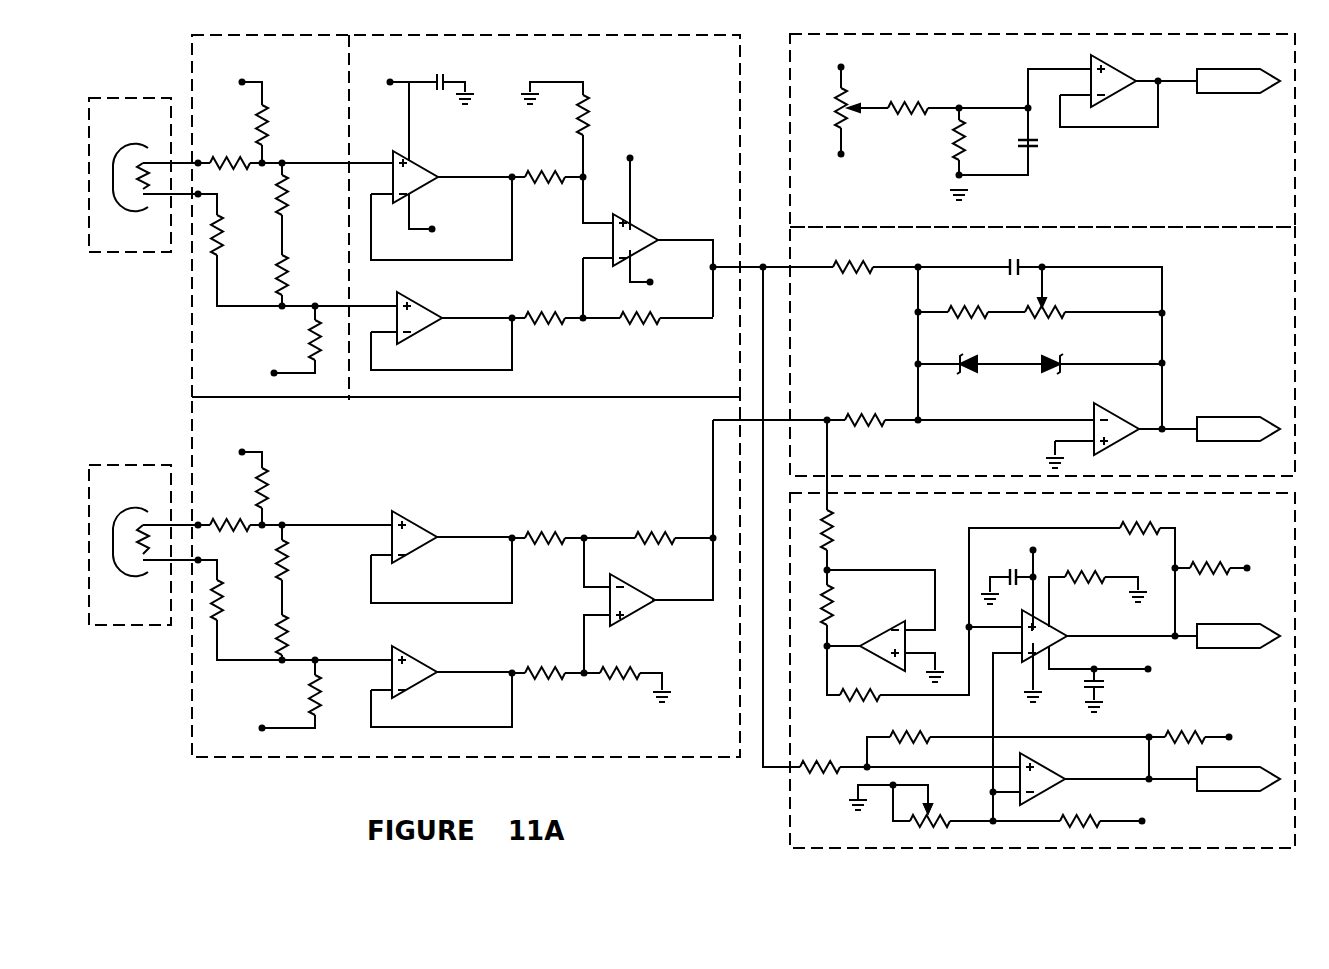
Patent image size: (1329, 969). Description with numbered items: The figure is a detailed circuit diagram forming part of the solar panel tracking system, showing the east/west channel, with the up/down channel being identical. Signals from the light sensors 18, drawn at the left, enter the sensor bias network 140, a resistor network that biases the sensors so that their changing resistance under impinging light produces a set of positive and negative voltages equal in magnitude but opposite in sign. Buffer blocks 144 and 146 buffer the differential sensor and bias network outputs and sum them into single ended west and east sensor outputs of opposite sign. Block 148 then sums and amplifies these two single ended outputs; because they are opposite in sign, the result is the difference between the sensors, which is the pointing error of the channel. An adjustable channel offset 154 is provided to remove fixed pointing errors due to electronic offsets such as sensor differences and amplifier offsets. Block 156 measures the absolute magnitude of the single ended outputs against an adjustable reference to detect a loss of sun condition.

The sensors 18 is at (103, 98).
The sensor bias network 140 is at (192, 357).
The buffer and summing block 144 is at (740, 52).
The buffer and summing block 146 is at (192, 425).
The summing and amplifying block 148 is at (790, 252).
The adjustable channel offset 154 is at (790, 125).
The loss of sun detection block 156 is at (790, 800).